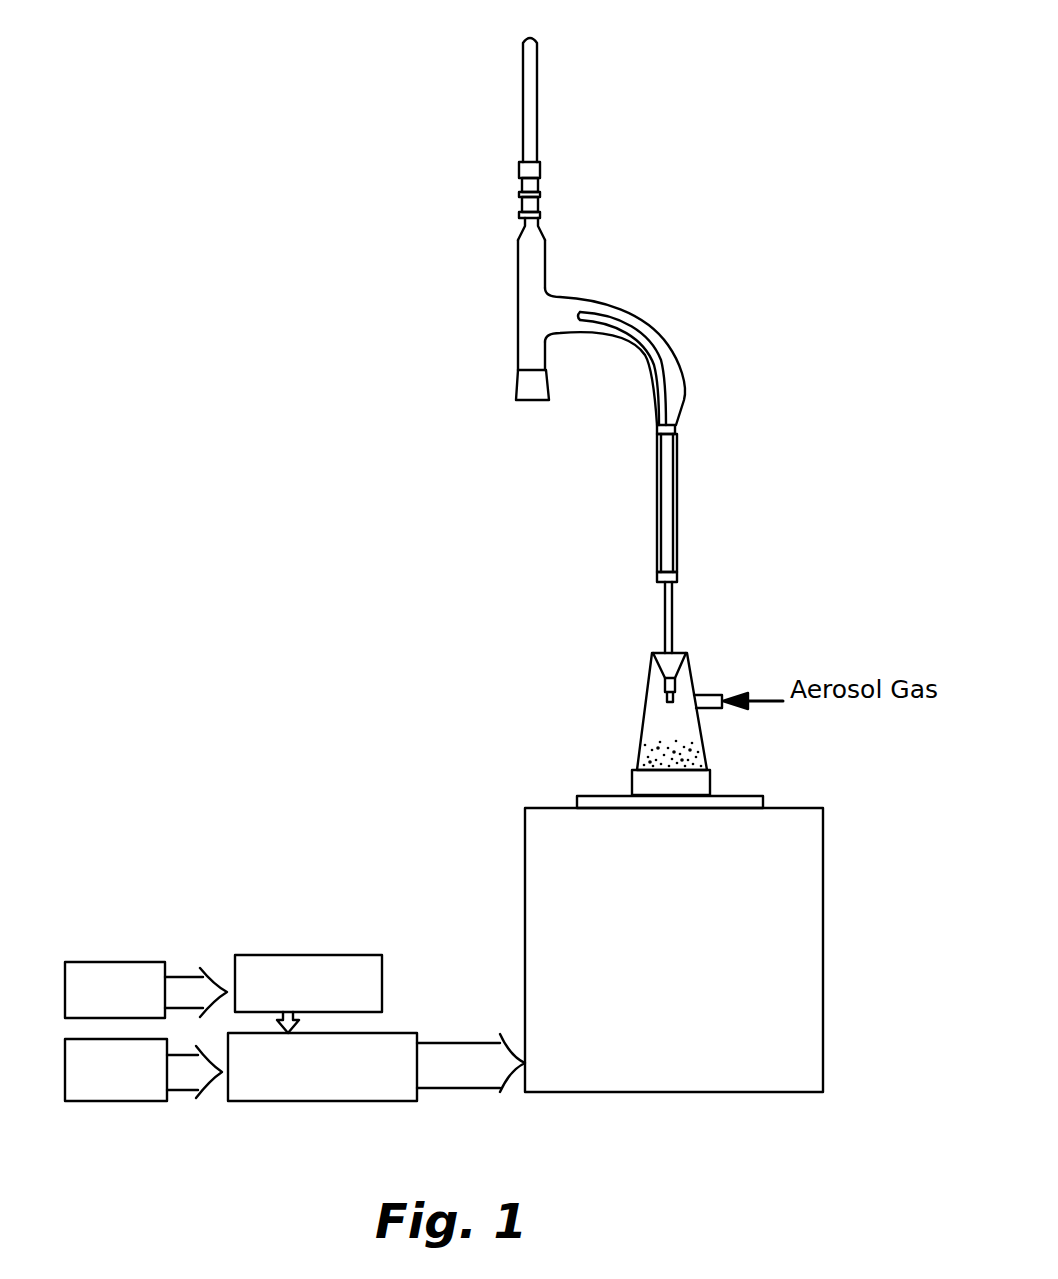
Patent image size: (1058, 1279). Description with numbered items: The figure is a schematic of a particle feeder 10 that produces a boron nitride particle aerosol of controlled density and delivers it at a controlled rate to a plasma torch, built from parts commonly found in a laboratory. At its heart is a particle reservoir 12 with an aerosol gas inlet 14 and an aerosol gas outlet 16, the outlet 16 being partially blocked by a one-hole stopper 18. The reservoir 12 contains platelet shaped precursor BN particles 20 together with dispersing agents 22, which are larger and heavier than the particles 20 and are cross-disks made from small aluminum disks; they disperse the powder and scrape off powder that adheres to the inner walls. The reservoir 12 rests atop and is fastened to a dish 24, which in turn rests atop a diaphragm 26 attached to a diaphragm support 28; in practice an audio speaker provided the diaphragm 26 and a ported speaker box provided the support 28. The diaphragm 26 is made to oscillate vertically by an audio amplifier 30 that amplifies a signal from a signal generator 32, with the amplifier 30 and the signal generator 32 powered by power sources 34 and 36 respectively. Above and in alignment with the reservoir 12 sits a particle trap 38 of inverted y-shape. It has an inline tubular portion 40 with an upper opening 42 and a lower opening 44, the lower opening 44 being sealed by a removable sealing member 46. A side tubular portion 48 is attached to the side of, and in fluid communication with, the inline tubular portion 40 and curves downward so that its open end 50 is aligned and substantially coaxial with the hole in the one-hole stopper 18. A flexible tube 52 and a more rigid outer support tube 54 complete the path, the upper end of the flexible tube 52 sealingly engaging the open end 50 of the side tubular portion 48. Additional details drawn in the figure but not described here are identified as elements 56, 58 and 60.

The particle feeder 10 is at (278, 383).
The particle reservoir 12 is at (641, 731).
The aerosol gas inlet 14 is at (707, 693).
The aerosol gas outlet 16 is at (660, 657).
The one-hole stopper 18 is at (684, 654).
The platelet shaped precursor BN particles 20 is at (705, 749).
The dispersing agents 22 is at (632, 781).
The dish 24 is at (763, 800).
The diaphragm 26 is at (577, 803).
The diaphragm support 28 is at (525, 860).
The audio amplifier 30 is at (322, 1067).
The signal generator 32 is at (308, 983).
The power source 34 is at (108, 1101).
The power source 36 is at (118, 962).
The particle trap 38 is at (577, 297).
The inline tubular portion 40 is at (517, 296).
The upper opening 42 is at (544, 227).
The lower opening 44 is at (515, 333).
The removable sealing member 46 is at (535, 400).
The side tubular portion 48 is at (679, 343).
The open end 50 is at (677, 432).
The flexible tube 52 is at (679, 506).
The outer support tube 54 is at (665, 626).
The inner tube 56 is at (637, 323).
The upper tube 58 is at (537, 95).
The fittings 60 is at (524, 202).